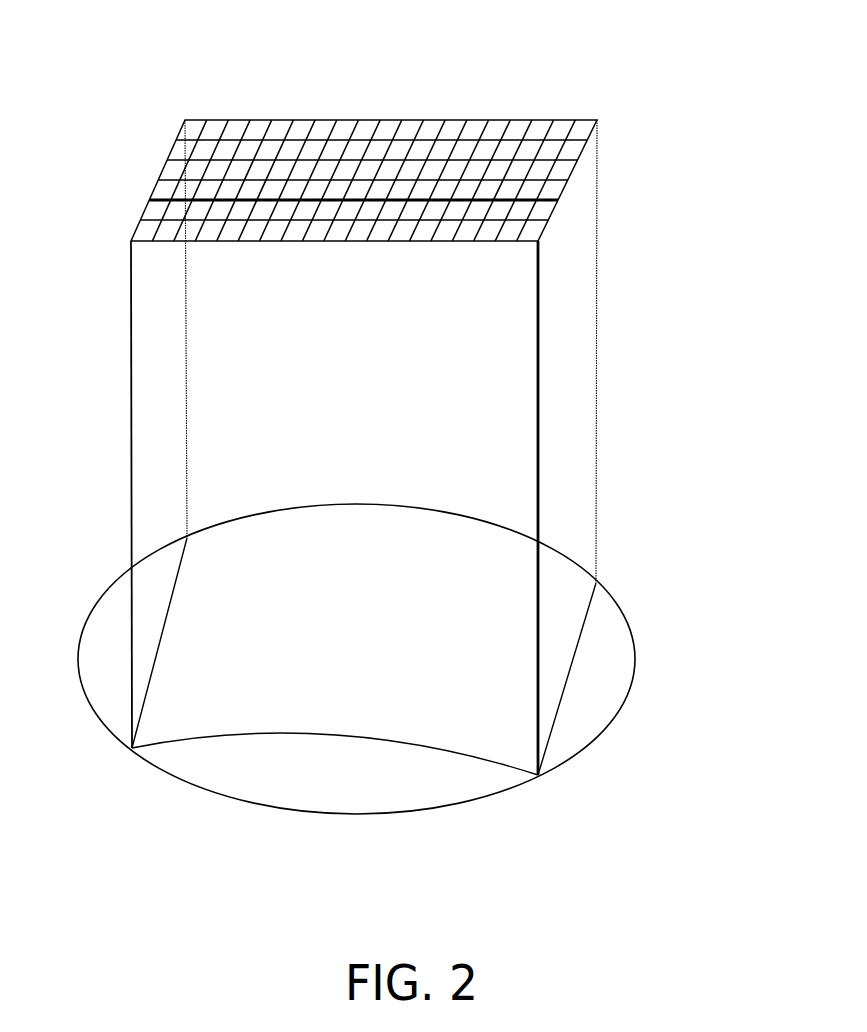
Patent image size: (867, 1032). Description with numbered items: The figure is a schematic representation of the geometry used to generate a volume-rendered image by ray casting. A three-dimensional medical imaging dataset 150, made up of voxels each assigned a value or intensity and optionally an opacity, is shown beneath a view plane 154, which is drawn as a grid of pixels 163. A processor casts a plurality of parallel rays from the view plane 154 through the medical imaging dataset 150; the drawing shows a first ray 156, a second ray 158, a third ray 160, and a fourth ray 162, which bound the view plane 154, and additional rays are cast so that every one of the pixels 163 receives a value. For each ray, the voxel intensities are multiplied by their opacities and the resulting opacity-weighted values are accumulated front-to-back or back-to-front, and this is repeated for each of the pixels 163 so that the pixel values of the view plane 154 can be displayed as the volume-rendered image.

The 3D medical imaging dataset 150 is at (610, 698).
The view plane 154 is at (401, 127).
The first ray 156 is at (187, 350).
The second ray 158 is at (131, 437).
The third ray 160 is at (597, 350).
The fourth ray 162 is at (538, 405).
The pixels 163 is at (207, 150).